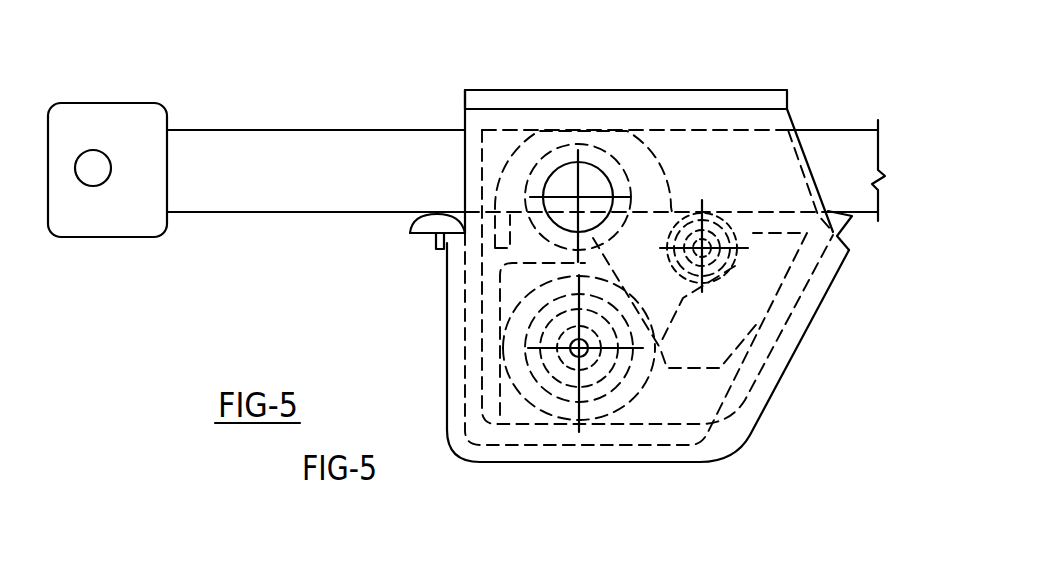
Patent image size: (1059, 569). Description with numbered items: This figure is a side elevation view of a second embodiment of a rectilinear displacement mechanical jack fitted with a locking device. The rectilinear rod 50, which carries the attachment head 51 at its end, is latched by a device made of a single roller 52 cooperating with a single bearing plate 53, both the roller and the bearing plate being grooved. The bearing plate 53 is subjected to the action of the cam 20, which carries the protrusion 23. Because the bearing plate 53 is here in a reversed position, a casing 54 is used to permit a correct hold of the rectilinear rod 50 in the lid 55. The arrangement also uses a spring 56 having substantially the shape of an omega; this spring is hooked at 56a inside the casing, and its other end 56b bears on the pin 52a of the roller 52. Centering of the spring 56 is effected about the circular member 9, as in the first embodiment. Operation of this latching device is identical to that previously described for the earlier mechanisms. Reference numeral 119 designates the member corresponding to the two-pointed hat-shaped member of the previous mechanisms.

The circular member 9 is at (572, 153).
The cam 20 is at (603, 403).
The protrusion 23 is at (547, 387).
The rectilinear rod 50 is at (845, 140).
The attachment head 51 is at (137, 120).
The roller 52 is at (722, 262).
The pin 52a is at (702, 210).
The bearing plate 53 is at (727, 342).
The casing 54 is at (620, 127).
The lid 55 is at (705, 98).
The spring 56 is at (548, 138).
The hooked end of spring 56a is at (438, 243).
The other end of spring 56b is at (740, 210).
The two-pointed hat-shaped member 119 is at (515, 285).